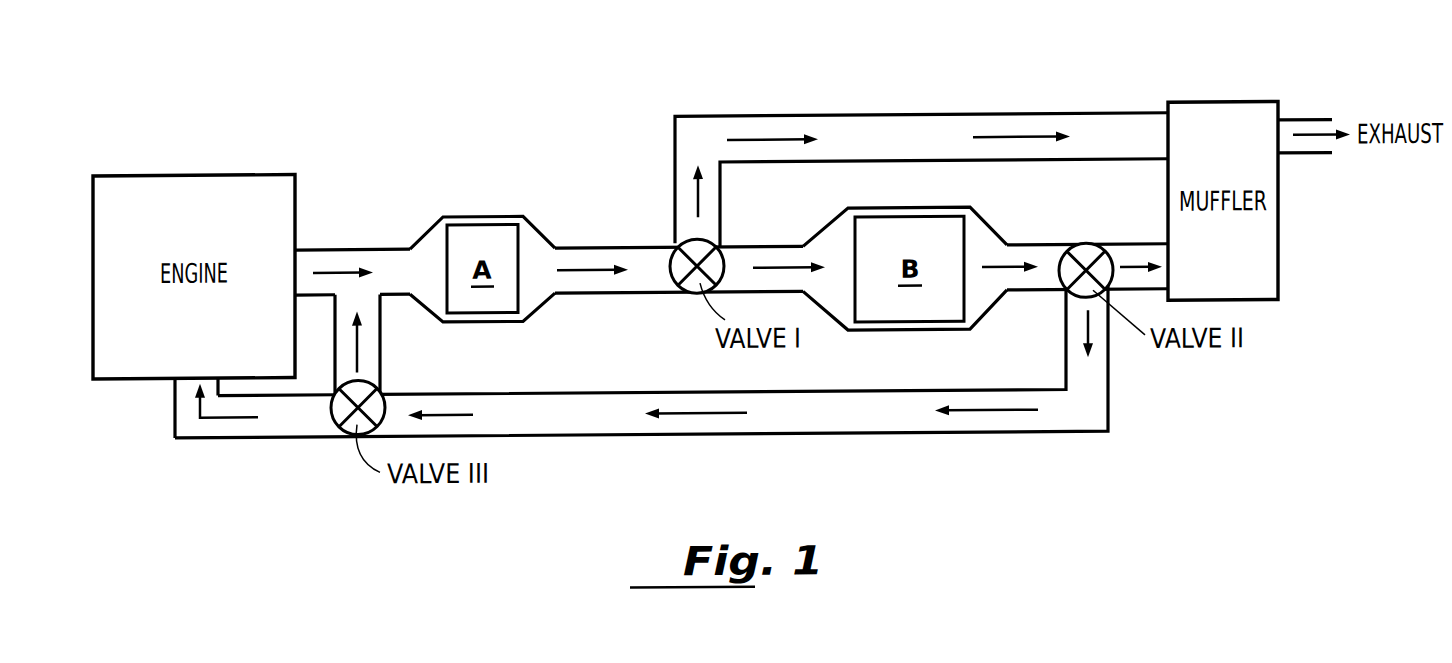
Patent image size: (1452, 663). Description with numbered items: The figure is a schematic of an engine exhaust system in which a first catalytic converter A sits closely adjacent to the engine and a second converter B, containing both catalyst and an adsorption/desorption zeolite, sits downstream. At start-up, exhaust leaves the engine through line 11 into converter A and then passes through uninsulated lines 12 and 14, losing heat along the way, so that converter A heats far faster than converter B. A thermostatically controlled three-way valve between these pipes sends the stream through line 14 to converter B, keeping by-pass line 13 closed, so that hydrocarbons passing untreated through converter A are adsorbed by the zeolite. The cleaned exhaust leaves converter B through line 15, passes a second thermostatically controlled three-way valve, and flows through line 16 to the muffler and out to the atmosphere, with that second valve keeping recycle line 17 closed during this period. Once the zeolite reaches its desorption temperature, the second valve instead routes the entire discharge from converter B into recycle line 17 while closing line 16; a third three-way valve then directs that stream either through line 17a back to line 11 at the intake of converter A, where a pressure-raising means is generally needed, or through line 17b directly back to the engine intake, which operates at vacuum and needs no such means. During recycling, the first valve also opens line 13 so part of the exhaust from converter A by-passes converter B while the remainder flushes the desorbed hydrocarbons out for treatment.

The line 11 is at (358, 250).
The line 12 is at (588, 258).
The line 13 is at (885, 129).
The line 14 is at (764, 259).
The line 15 is at (1039, 257).
The line 16 is at (1138, 256).
The recycle line 17 is at (882, 417).
The recycle line 17a is at (376, 348).
The line 17b is at (272, 425).